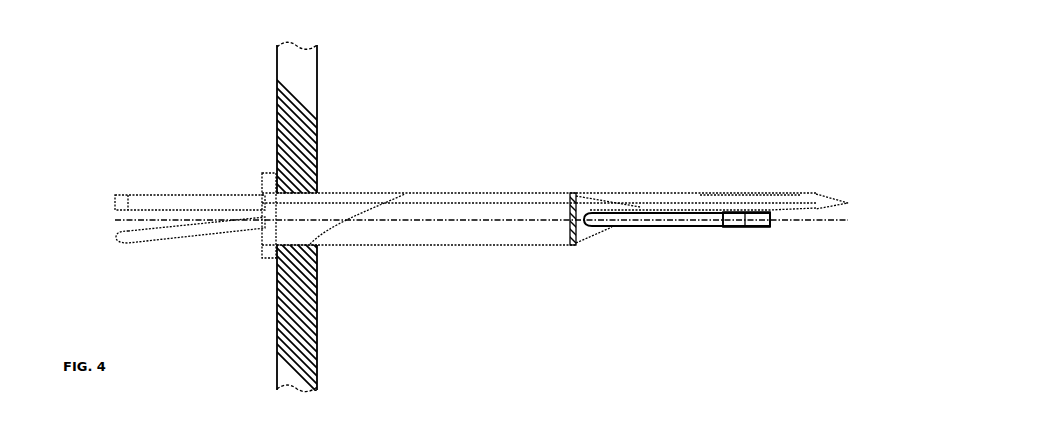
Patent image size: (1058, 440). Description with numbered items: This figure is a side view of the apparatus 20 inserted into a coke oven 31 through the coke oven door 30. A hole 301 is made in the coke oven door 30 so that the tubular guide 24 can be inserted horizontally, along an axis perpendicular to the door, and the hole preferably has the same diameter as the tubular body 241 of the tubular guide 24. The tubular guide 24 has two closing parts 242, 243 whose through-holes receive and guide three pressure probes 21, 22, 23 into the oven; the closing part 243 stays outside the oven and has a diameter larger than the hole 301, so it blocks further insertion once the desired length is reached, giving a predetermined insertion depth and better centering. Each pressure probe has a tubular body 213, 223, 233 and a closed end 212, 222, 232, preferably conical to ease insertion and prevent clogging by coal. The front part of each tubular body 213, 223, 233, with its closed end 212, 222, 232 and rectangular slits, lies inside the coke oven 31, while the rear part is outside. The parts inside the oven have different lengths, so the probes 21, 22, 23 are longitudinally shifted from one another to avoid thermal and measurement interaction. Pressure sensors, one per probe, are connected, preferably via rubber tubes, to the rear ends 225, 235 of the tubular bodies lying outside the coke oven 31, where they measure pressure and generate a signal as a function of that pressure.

The apparatus 20 is at (596, 148).
The pressure probe 21 is at (770, 226).
The closed end 212 is at (780, 220).
The tubular body 213 is at (757, 225).
The pressure probe 22 is at (806, 196).
The closed end 222 is at (826, 198).
The tubular body 223 is at (762, 196).
The pressure probe 23 is at (718, 228).
The closed end 232 is at (735, 225).
The tubular body 233 is at (687, 224).
The tubular guide 24 is at (422, 305).
The tubular body 241 is at (455, 242).
The closing part 242 is at (585, 239).
The closing part 243 is at (264, 249).
The end of tubular body 225 is at (200, 200).
The end of tubular body 235 is at (173, 232).
The coke oven door 30 is at (276, 98).
The hole 301 is at (302, 190).
The coke oven 31 is at (382, 85).